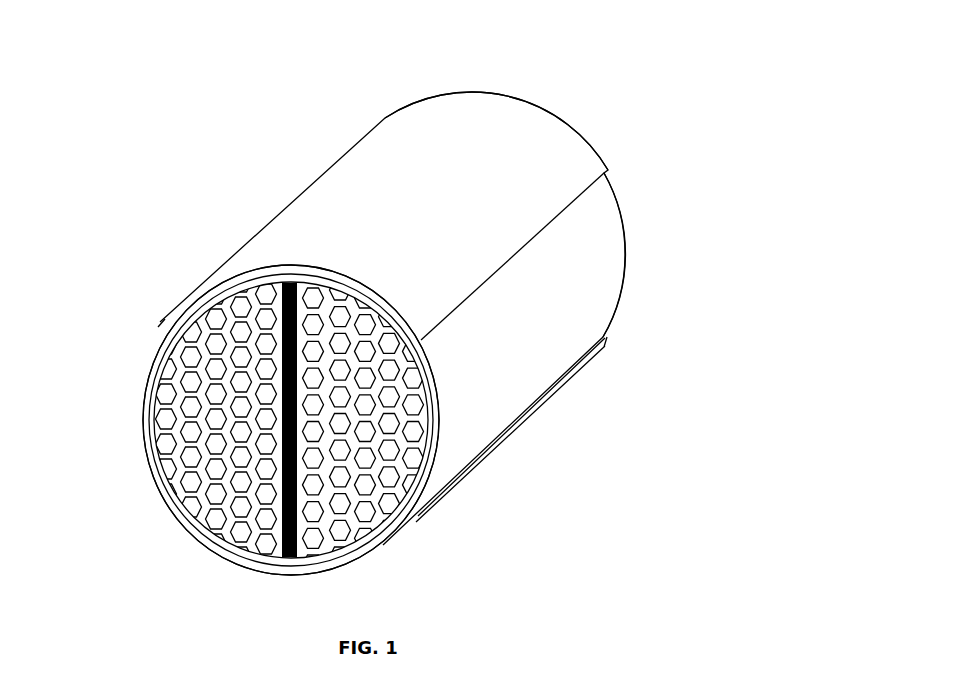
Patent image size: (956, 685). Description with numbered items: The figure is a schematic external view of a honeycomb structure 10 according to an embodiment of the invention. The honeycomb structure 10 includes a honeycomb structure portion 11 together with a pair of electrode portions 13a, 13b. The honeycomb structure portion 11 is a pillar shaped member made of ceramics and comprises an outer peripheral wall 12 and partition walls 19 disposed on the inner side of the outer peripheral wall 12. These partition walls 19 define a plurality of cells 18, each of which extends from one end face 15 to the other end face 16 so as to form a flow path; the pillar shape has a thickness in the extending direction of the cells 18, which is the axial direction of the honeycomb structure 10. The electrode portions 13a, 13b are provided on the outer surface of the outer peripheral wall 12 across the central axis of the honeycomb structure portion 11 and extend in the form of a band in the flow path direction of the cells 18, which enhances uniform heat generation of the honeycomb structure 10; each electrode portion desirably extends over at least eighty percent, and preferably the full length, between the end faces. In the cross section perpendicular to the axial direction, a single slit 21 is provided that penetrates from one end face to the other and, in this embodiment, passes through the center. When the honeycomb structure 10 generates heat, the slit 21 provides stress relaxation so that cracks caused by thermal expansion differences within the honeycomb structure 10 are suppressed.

The honeycomb structure 10 is at (247, 112).
The honeycomb structure portion 11 is at (136, 397).
The outer peripheral wall 12 is at (588, 290).
The electrode portion 13a is at (547, 127).
The electrode portion 13b is at (404, 537).
The one end face 15 is at (433, 398).
The other end face 16 is at (622, 217).
The cells 18 is at (188, 470).
The partition walls 19 is at (192, 340).
The slit 21 is at (281, 296).